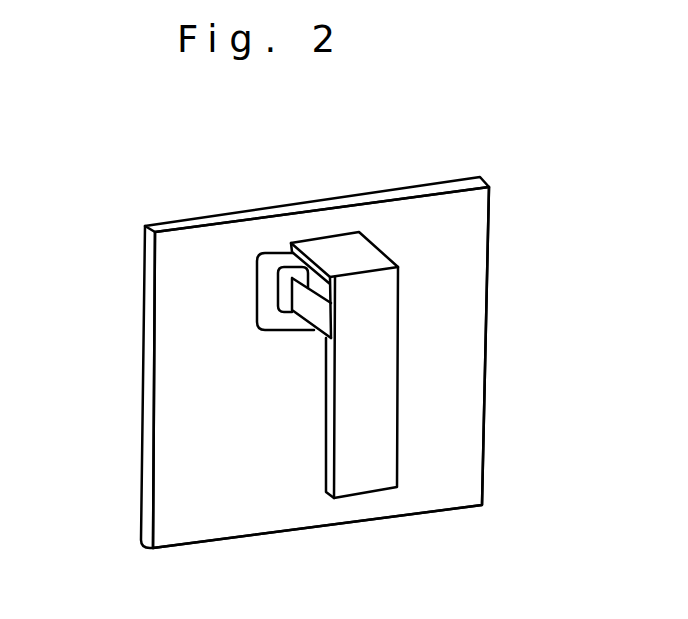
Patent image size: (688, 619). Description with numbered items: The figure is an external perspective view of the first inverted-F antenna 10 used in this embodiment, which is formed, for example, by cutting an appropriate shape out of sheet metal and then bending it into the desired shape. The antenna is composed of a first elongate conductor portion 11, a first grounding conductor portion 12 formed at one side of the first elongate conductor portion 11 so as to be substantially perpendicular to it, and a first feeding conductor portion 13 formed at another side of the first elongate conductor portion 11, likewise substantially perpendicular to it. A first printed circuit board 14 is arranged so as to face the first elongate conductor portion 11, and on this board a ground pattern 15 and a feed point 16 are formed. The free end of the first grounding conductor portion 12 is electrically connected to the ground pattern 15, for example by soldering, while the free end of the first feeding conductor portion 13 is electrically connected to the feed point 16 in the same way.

The first inverted-F antenna 10 is at (293, 158).
The first elongate conductor portion 11 is at (383, 446).
The first grounding conductor portion 12 is at (383, 252).
The first feeding conductor portion 13 is at (312, 305).
The first printed circuit board 14 is at (485, 352).
The ground pattern 15 is at (453, 277).
The feed point 16 is at (278, 288).